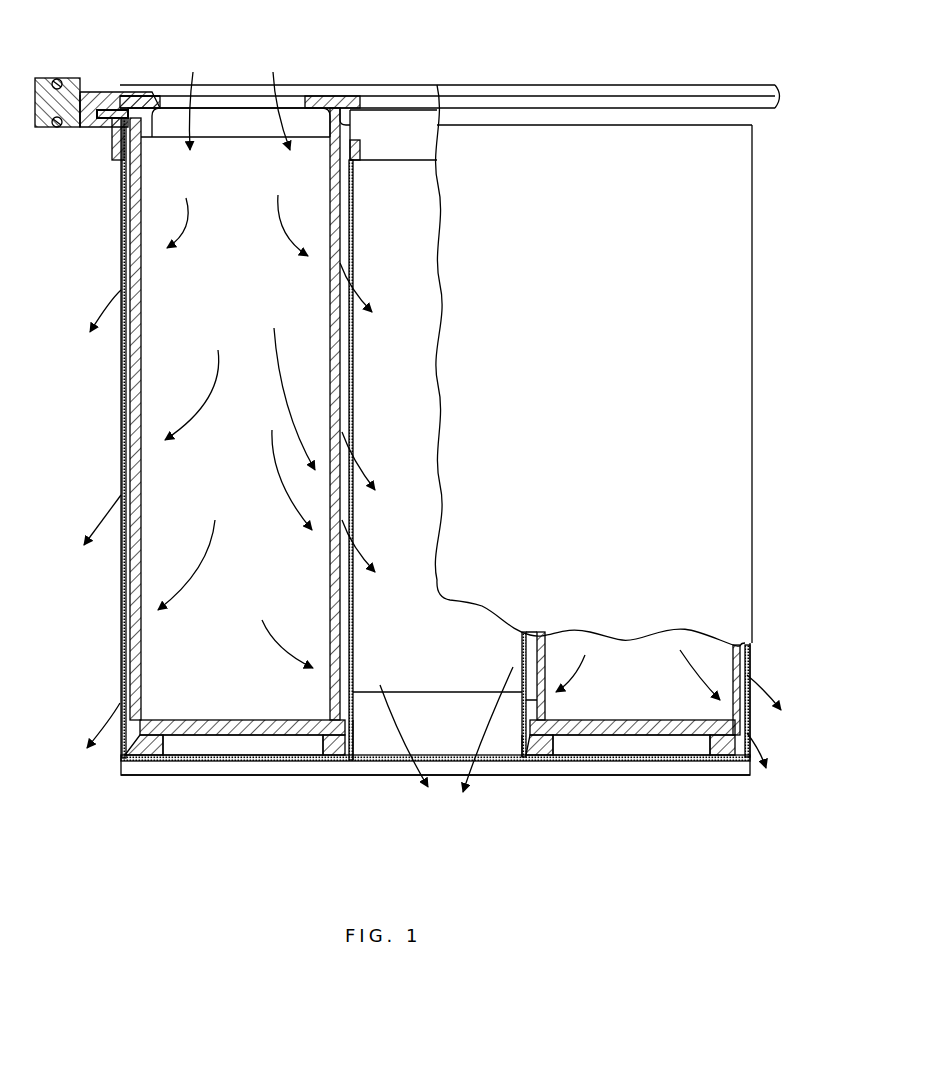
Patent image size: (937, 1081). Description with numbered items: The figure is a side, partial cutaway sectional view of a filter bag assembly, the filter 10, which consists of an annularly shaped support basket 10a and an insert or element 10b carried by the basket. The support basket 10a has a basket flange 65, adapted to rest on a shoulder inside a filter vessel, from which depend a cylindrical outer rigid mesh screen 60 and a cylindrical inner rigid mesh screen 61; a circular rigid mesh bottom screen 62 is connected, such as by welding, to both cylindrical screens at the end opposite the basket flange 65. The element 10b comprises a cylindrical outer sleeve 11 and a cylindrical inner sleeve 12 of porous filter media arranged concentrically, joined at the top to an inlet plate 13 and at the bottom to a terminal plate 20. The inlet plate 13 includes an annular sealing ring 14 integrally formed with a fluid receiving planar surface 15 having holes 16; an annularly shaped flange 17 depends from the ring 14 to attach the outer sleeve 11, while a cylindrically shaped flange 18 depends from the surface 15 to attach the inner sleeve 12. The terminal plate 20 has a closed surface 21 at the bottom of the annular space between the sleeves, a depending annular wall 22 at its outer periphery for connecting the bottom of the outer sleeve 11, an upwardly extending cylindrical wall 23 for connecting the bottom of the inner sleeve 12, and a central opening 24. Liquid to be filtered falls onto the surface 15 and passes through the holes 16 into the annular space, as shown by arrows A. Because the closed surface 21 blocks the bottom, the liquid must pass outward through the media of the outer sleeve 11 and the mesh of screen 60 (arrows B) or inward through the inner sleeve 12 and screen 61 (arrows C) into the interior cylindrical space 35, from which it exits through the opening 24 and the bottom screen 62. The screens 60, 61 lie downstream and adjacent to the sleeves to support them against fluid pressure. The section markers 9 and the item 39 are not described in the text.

The section line indicator 9 is at (62, 385).
The filter 10 is at (165, 797).
The support basket 10a is at (107, 442).
The insert or element 10b is at (708, 493).
The outer sleeve 11 is at (121, 640).
The inner sleeve 12 is at (352, 640).
The inlet plate 13 is at (342, 82).
The annular sealing ring 14 is at (108, 85).
The fluid receiving planar surface 15 is at (150, 95).
The holes or openings 16 is at (240, 92).
The annularly shaped flange 17 is at (110, 150).
The cylindrically shaped flange 18 is at (360, 155).
The terminal plate 20 is at (345, 760).
The closed surface 21 is at (222, 720).
The depending annular wall or flange 22 is at (122, 752).
The upwardly extending cylindrical wall or flange 23 is at (352, 700).
The opening 24 is at (502, 745).
The interior cylindrical space 35 is at (478, 661).
The fastening screw 39 is at (78, 127).
The outer rigid mesh cylindrical screen 60 is at (120, 392).
The inner rigid mesh cylindrical screen 61 is at (353, 380).
The circular rigid mesh bottom screen 62 is at (232, 770).
The basket flange 65 is at (75, 80).
The arrows A is at (198, 128).
The arrows B is at (100, 302).
The arrows C is at (365, 284).